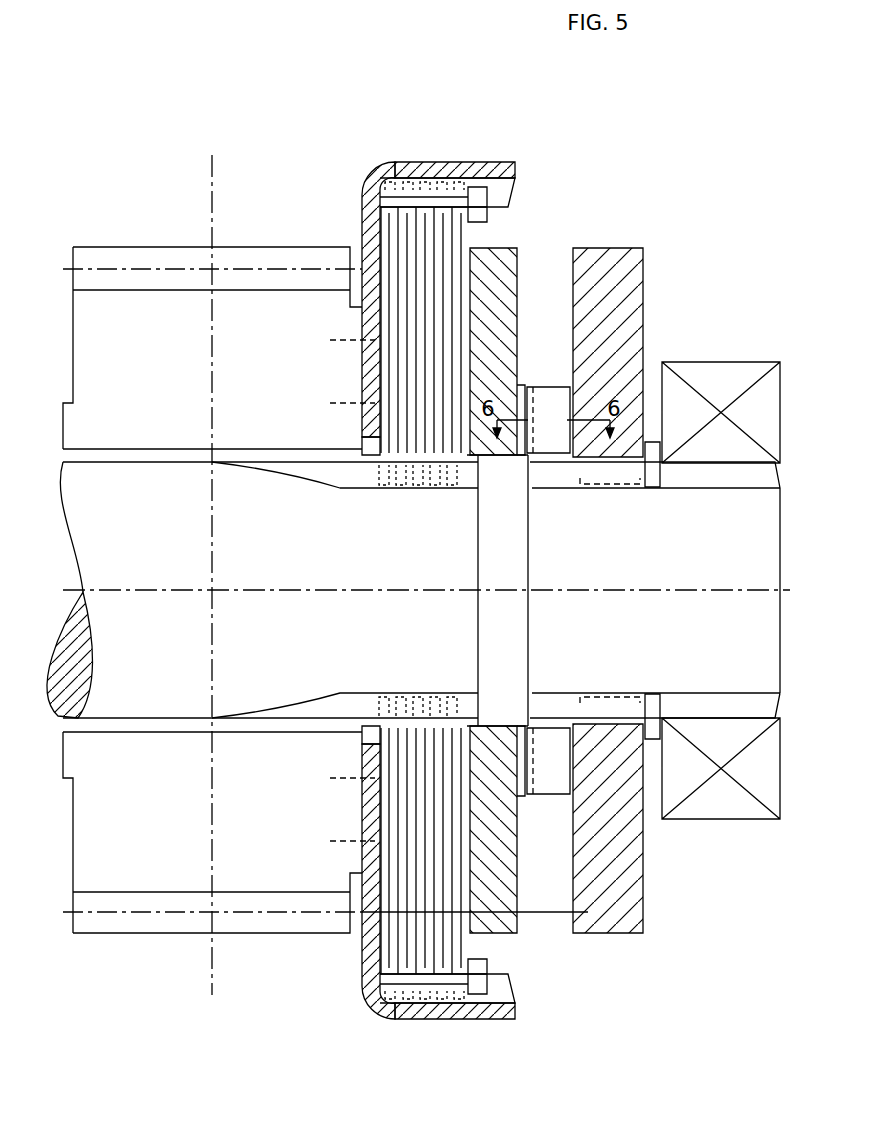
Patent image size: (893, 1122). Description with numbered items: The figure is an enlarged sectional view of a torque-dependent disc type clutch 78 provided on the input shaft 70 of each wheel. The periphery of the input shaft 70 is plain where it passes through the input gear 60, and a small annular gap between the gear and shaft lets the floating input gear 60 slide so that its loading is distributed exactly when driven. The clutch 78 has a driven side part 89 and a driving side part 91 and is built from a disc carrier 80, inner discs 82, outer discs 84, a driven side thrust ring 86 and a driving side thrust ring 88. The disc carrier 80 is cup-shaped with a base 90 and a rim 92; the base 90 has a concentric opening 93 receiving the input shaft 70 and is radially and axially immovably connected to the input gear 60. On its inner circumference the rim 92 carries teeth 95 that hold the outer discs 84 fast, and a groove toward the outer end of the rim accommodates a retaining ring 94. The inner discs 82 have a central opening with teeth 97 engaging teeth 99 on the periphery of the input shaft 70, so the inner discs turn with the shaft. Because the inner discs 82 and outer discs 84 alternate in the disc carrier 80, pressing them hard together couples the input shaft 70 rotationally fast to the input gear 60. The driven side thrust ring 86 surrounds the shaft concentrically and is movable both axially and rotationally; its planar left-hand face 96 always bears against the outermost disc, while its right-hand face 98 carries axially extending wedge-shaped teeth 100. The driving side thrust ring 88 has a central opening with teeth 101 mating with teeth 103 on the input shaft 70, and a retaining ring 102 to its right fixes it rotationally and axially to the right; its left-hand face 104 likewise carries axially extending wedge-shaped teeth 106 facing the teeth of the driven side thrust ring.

The input gear 60 is at (148, 367).
The input shaft 70 is at (292, 552).
The disc type clutch 78 is at (527, 203).
The disc carrier 80 is at (507, 187).
The inner discs 82 is at (373, 227).
The outer discs 84 is at (393, 180).
The driven side thrust ring 86 is at (500, 247).
The driving side thrust ring 88 is at (643, 280).
The driven side part 89 is at (515, 147).
The base 90 is at (362, 243).
The driving side part 91 is at (523, 222).
The rim 92 is at (495, 170).
The concentric opening 93 is at (362, 438).
The retaining ring 94 is at (517, 197).
The teeth 95 is at (487, 212).
The left-hand face 96 is at (467, 897).
The teeth 97 is at (452, 488).
The right-hand face 98 is at (517, 893).
The teeth 99 is at (318, 484).
The wedge-shaped teeth 100 is at (533, 390).
The teeth 101 is at (630, 486).
The retaining ring 102 is at (652, 440).
The teeth 103 is at (550, 483).
The left-hand face 104 is at (563, 902).
The wedge-shaped teeth 106 is at (553, 385).